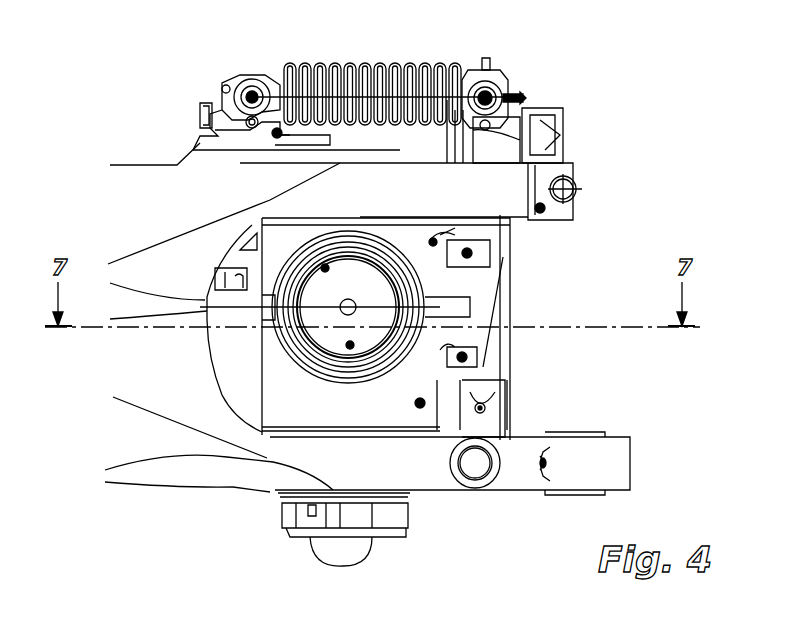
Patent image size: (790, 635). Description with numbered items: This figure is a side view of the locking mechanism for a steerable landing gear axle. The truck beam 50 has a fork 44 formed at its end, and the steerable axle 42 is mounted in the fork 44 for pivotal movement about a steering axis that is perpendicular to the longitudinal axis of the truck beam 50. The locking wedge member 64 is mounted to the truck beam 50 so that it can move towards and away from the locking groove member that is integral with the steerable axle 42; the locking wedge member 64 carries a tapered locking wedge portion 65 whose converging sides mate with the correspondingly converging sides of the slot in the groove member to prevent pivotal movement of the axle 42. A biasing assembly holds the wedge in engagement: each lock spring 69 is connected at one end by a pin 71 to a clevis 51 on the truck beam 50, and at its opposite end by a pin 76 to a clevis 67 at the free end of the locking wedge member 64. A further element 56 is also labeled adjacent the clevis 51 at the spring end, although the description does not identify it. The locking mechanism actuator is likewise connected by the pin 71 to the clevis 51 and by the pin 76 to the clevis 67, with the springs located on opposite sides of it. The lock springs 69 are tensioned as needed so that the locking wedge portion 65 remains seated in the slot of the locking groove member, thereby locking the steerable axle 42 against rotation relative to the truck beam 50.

The steerable axle 42 is at (432, 377).
The fork 44 is at (354, 456).
The truck beam 50 is at (150, 214).
The clevis 51 is at (236, 86).
The pivot 56 is at (258, 76).
The locking wedge member 64 is at (512, 240).
The locking wedge portion 65 is at (494, 385).
The clevis 67 is at (500, 62).
The lock spring 69 is at (447, 81).
The pin 71 is at (200, 116).
The pin 76 is at (527, 98).